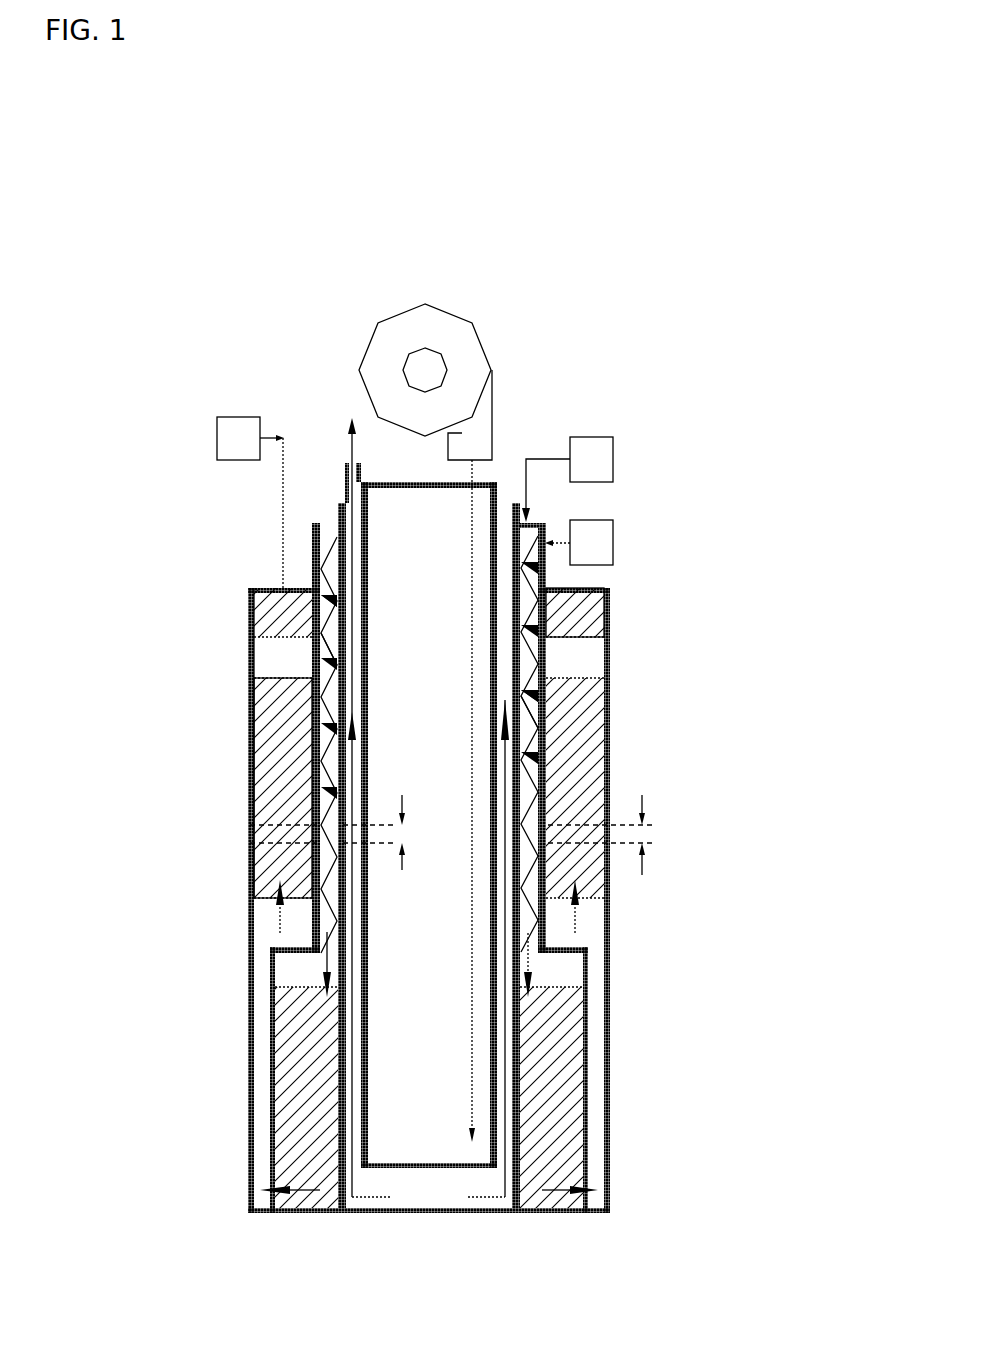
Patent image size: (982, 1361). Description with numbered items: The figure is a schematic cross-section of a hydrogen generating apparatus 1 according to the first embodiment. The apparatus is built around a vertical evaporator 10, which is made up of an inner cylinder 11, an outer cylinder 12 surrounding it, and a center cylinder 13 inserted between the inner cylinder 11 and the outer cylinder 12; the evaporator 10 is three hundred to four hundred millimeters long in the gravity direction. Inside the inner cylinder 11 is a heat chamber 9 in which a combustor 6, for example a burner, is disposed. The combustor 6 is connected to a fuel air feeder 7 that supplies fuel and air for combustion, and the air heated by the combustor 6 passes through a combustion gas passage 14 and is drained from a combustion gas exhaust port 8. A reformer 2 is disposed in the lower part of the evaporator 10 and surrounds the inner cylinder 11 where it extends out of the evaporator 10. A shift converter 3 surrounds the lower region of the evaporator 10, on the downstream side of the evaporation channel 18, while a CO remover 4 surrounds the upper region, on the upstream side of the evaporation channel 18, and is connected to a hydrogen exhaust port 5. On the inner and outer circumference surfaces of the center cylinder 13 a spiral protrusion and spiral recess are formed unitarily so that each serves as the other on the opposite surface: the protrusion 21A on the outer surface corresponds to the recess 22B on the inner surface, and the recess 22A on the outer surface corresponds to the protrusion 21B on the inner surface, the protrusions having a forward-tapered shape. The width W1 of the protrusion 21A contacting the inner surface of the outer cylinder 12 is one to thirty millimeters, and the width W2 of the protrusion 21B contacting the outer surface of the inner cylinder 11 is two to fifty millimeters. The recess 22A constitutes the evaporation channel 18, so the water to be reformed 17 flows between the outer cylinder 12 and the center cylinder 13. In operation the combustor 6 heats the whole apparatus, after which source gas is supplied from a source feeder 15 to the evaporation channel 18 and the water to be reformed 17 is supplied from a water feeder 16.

The hydrogen generating apparatus 1 is at (64, 344).
The reformer 2 is at (557, 1145).
The shift converter 3 is at (575, 790).
The CO remover 4 is at (577, 622).
The hydrogen exhaust port 5 is at (208, 428).
The combustor 6 is at (437, 918).
The fuel air feeder 7 is at (492, 425).
The combustion gas exhaust port 8 is at (345, 490).
The heat chamber 9 is at (363, 1078).
The evaporator 10 is at (338, 556).
The inner cylinder 11 is at (332, 577).
The outer cylinder 12 is at (320, 826).
The center cylinder 13 is at (313, 727).
The combustion gas passage 14 is at (357, 1003).
The source feeder 15 is at (613, 458).
The water feeder 16 is at (613, 537).
The water to be reformed 17 is at (330, 657).
The evaporation channel 18 is at (326, 898).
The protrusion on the outer circumference surface of center cylinder 21A is at (607, 691).
The protrusion on the inner circumference surface of center cylinder 21B is at (391, 622).
The recess on the outer circumference surface of center cylinder 22A is at (604, 723).
The recess on the inner circumference surface of center cylinder 22B is at (380, 675).
The width of protrusion on outer circumference surface W1 is at (620, 835).
The width of protrusion on inner circumference surface W2 is at (348, 832).